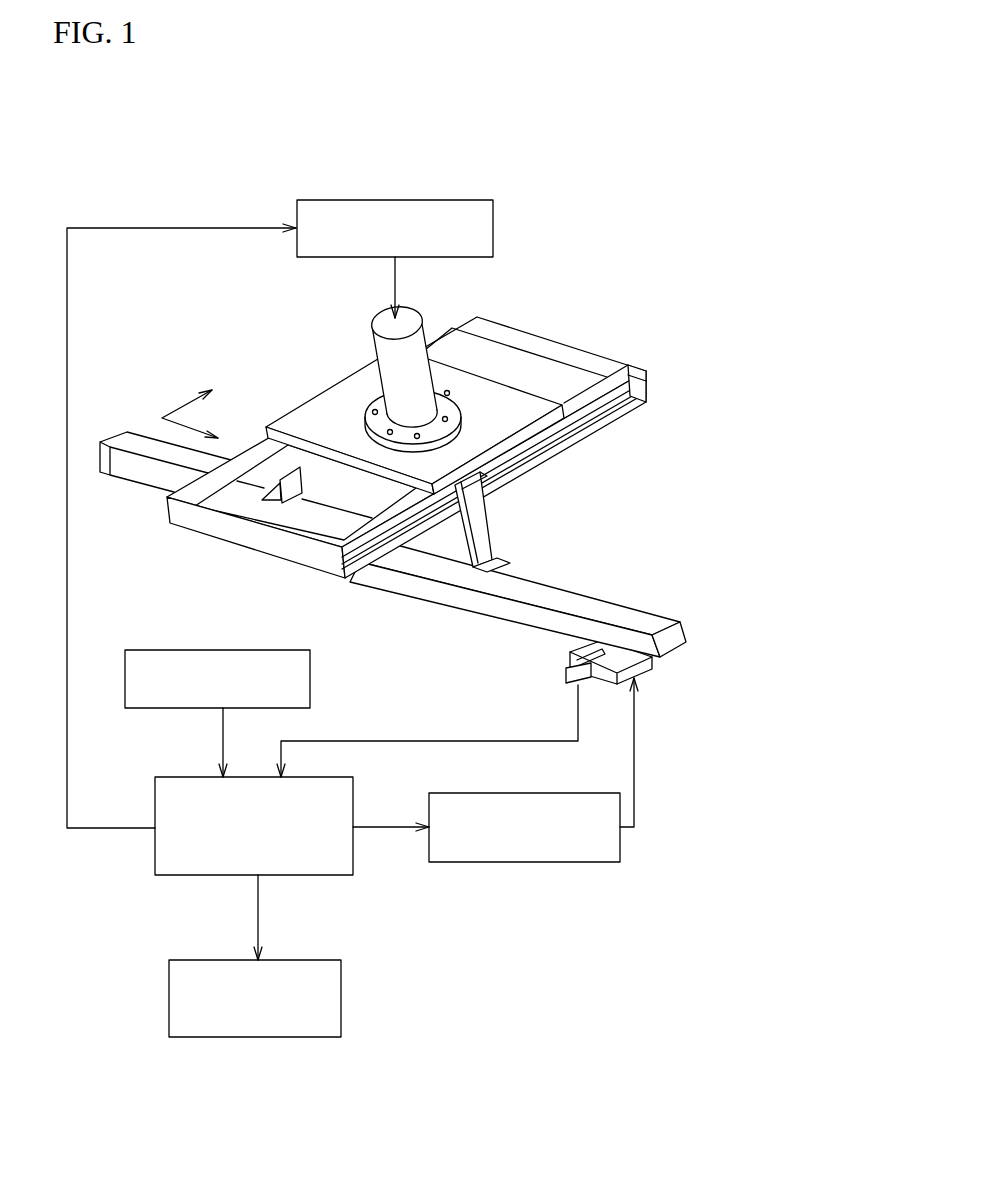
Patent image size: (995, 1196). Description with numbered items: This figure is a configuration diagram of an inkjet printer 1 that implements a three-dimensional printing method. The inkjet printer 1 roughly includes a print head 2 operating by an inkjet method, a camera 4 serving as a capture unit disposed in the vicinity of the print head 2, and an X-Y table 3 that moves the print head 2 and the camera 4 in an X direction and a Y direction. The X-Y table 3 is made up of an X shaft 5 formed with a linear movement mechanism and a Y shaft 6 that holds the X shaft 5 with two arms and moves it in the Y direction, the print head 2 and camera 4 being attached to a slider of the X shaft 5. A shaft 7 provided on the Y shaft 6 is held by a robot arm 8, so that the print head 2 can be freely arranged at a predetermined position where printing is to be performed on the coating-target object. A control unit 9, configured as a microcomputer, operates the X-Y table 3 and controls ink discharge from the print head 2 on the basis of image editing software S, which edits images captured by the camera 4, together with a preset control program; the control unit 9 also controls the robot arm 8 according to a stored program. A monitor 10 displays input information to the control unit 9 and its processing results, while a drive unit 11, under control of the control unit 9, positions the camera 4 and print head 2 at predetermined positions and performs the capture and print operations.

The inkjet printer 1 is at (560, 265).
The print head 2 is at (643, 670).
The X-Y table 3 is at (712, 380).
The camera 4 is at (570, 675).
The X shaft 5 is at (580, 590).
The Y shaft 6 is at (563, 444).
The shaft 7 is at (372, 324).
The robot arm 8 is at (395, 200).
The control unit 9 is at (320, 873).
The monitor 10 is at (342, 1000).
The drive unit 11 is at (517, 862).
The image editing software S is at (202, 650).